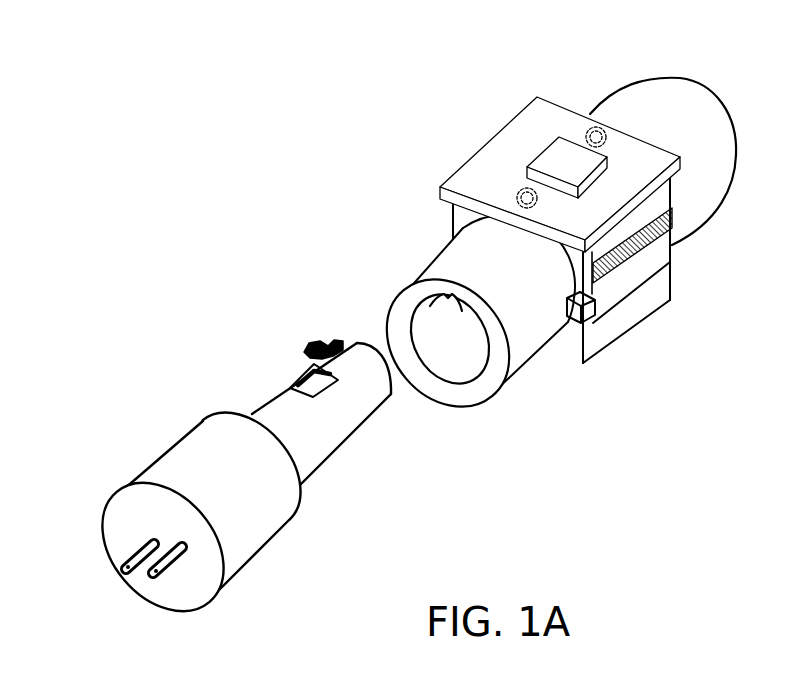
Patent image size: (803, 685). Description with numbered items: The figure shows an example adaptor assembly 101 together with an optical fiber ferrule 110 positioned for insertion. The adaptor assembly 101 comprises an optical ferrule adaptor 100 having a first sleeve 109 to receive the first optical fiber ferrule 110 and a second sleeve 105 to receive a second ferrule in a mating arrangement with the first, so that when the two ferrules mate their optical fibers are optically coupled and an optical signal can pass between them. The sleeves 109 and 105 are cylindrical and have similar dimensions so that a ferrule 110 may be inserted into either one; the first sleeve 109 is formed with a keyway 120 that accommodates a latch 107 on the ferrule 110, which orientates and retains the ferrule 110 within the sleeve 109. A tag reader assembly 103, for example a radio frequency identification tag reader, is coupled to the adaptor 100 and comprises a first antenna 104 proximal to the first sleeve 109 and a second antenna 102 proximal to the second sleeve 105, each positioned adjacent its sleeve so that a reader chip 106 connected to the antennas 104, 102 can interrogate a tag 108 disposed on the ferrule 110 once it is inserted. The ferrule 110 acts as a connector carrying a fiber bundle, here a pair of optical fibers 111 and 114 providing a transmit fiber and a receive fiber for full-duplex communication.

The optical ferrule adaptor 100 is at (671, 256).
The adaptor assembly 101 is at (509, 85).
The second antenna 102 is at (586, 131).
The tag reader assembly 103 is at (562, 104).
The first antenna 104 is at (518, 193).
The second sleeve 105 is at (679, 125).
The reader chip 106 is at (587, 170).
The latch 107 is at (306, 339).
The tag 108 is at (294, 380).
The first sleeve 109 is at (519, 302).
The optical fiber ferrule 110 is at (157, 377).
The optical fiber 111 is at (115, 563).
The optical fiber 114 is at (173, 567).
The keyway 120 is at (436, 302).